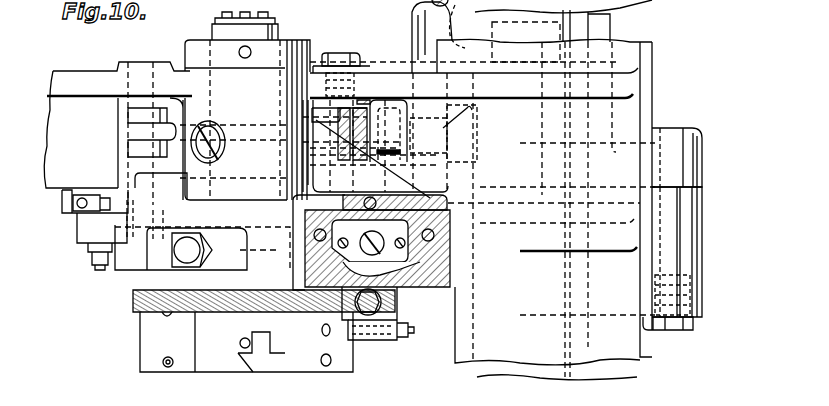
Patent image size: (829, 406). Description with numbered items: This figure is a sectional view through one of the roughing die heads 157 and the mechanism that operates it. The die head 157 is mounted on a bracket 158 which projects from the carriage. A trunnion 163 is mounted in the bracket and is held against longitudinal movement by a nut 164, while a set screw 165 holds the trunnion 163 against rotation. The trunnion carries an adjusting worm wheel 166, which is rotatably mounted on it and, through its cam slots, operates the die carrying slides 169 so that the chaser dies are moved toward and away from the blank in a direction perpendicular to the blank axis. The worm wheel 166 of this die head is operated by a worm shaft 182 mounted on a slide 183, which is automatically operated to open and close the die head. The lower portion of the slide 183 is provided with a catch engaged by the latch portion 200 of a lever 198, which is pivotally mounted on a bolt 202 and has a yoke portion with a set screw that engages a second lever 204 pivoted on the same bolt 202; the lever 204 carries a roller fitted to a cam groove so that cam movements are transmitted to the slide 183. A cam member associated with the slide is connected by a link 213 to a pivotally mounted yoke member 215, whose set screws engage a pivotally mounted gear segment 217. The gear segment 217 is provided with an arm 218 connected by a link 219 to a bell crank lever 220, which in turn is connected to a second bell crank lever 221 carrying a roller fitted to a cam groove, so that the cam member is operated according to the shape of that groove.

The roughing die head 157 is at (114, 359).
The bracket 158 is at (390, 80).
The trunnion 163 is at (203, 90).
The nut 164 is at (283, 44).
The set screw 165 is at (212, 132).
The adjusting worm wheel 166 is at (133, 306).
The die carrying slide 169 is at (260, 360).
The worm shaft 182 is at (383, 309).
The slide 183 is at (400, 272).
The lever 198 is at (680, 193).
The latch portion 200 is at (390, 216).
The bolt 202 is at (672, 332).
The second lever 204 is at (690, 208).
The link 213 is at (258, 198).
The yoke member 215 is at (77, 245).
The gear segment 217 is at (60, 197).
The arm 218 is at (128, 154).
The link 219 is at (347, 146).
The bell crank lever 220 is at (381, 159).
The second bell crank lever 221 is at (532, 36).